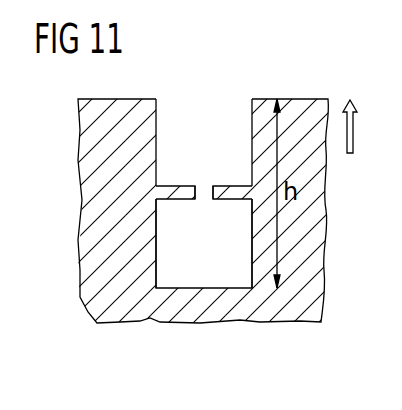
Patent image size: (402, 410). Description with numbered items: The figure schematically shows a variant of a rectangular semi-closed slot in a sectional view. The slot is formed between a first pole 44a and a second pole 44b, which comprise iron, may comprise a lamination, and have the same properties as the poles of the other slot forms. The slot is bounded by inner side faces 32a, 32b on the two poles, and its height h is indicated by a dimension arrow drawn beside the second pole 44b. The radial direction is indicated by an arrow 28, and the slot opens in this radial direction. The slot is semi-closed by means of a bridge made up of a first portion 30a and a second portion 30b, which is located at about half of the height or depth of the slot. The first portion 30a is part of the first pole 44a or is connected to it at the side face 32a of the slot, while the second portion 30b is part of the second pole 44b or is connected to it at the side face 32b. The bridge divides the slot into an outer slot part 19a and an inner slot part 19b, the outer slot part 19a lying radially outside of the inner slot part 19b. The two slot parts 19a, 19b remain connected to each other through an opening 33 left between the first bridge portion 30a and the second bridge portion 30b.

The outer slot part 19a is at (208, 125).
The inner slot part 19b is at (223, 278).
The arrow indicating radial direction 28 is at (357, 132).
The first portion of the bridge 30a is at (188, 185).
The second portion of the bridge 30b is at (222, 185).
The inner side face 32a is at (158, 245).
The inner side face 32b is at (250, 245).
The opening 33 is at (205, 190).
The first pole 44a is at (122, 203).
The second pole 44b is at (290, 220).